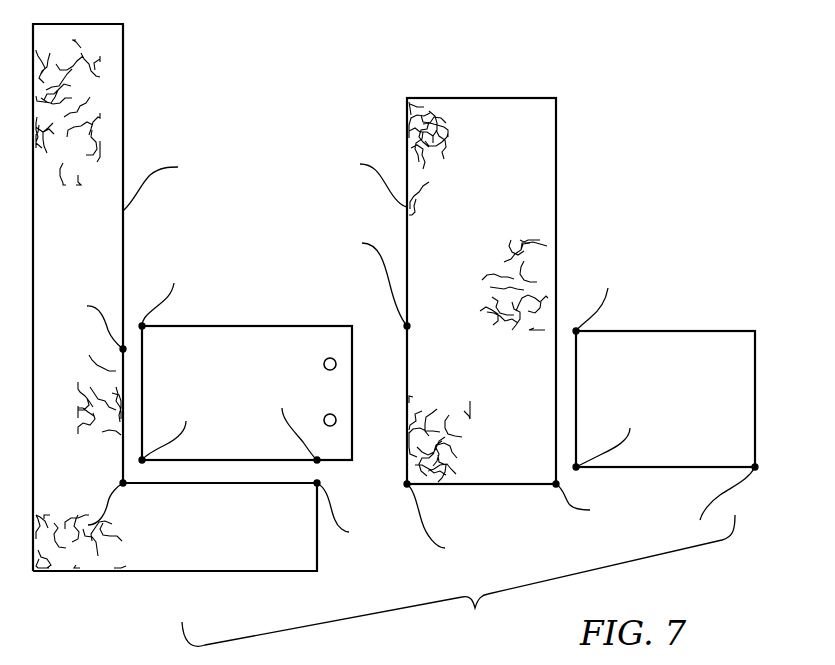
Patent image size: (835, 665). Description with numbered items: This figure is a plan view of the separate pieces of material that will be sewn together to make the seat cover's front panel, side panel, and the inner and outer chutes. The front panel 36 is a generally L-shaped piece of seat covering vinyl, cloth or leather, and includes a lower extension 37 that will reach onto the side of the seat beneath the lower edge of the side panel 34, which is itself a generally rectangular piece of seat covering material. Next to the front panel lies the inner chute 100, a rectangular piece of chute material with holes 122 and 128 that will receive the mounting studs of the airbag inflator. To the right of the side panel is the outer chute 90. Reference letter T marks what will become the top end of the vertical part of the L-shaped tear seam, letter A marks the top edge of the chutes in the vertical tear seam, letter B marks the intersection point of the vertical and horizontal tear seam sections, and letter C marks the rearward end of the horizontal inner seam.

The front panel 36 is at (93, 165).
The lower extension 37 is at (268, 546).
The side panel 34 is at (512, 176).
The inner chute 100 is at (250, 345).
The hole 128 is at (330, 358).
The hole 122 is at (330, 427).
The outer chute 90 is at (660, 353).